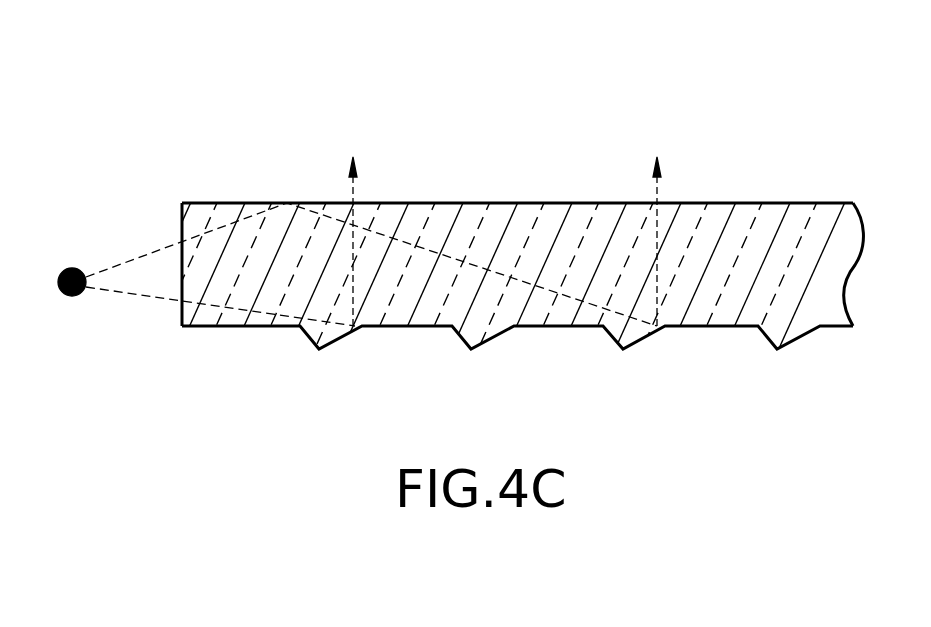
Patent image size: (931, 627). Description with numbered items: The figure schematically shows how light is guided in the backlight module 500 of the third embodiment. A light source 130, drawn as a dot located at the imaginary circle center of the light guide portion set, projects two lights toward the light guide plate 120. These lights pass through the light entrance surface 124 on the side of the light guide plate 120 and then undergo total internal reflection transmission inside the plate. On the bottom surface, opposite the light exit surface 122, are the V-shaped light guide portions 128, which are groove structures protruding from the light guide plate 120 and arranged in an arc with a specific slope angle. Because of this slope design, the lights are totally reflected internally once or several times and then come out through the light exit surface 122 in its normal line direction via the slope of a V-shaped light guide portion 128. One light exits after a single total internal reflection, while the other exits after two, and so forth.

The backlight module 500 is at (665, 90).
The light guide plate 120 is at (740, 250).
The light exit surface 122 is at (436, 203).
The light entrance surface 124 is at (182, 233).
The V-shaped light guide portion 128 is at (493, 338).
The light source 130 is at (72, 297).